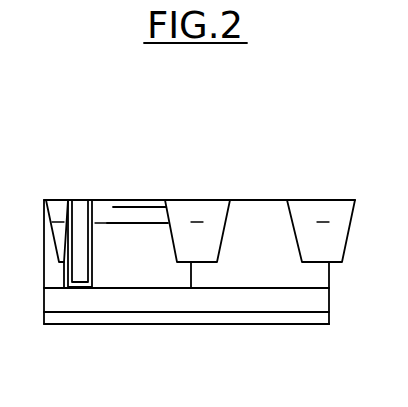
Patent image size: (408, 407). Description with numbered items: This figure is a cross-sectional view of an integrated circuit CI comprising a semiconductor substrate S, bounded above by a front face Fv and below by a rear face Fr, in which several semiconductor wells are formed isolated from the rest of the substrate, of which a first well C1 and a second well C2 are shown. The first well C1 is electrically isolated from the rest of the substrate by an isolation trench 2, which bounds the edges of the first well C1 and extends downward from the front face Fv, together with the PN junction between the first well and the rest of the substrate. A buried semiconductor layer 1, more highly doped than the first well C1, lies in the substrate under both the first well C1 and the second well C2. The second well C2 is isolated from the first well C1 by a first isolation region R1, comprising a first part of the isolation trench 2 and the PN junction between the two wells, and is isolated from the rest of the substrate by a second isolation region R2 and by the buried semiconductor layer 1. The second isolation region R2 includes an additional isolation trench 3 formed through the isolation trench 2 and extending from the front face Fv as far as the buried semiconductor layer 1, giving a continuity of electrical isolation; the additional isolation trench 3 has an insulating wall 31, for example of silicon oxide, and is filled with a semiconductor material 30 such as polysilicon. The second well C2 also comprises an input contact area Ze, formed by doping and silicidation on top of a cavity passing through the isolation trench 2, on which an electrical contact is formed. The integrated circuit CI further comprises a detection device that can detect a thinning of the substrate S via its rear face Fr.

The buried semiconductor layer 1 is at (97, 298).
The isolation trench 2 is at (187, 244).
The additional isolation trench 3 is at (79, 193).
The semiconductor material 30 is at (80, 212).
The insulating wall 31 is at (69, 209).
The input contact area Ze is at (132, 181).
The first well C1 is at (273, 225).
The second well C2 is at (151, 234).
The front face Fv is at (265, 200).
The rear face Fr is at (252, 326).
The semiconductor substrate S is at (187, 331).
The first isolation region R1 is at (181, 268).
The second isolation region R2 is at (61, 272).
The integrated circuit CI is at (338, 103).